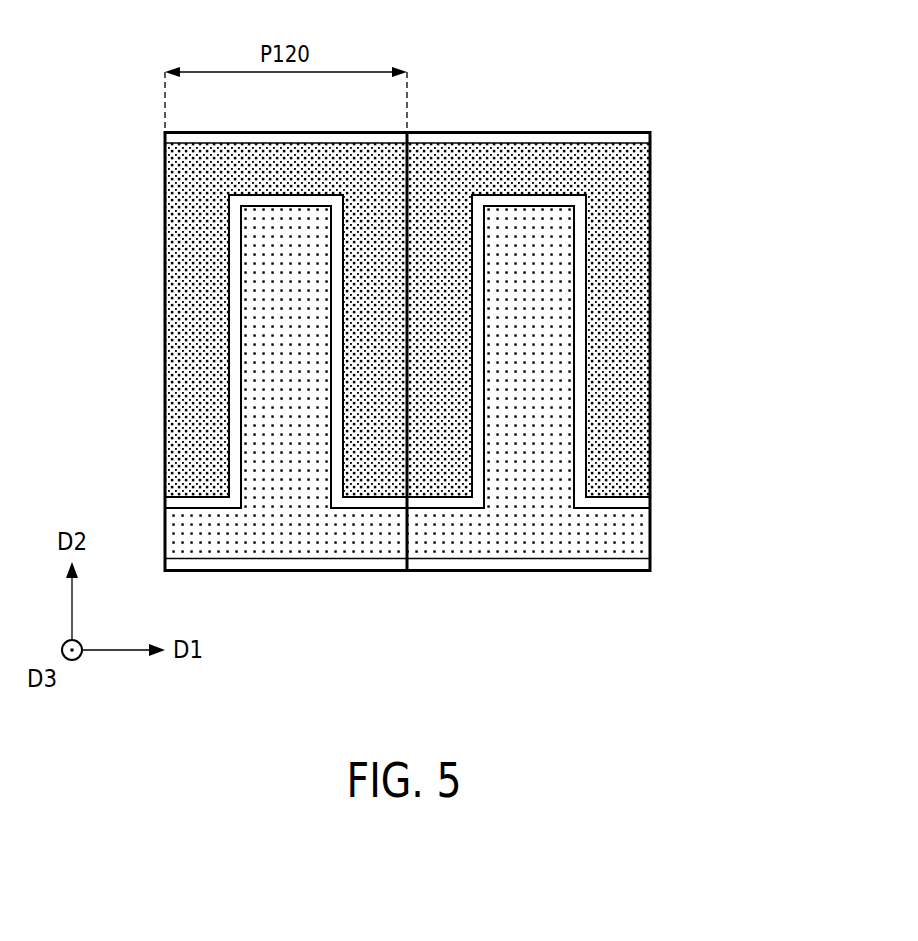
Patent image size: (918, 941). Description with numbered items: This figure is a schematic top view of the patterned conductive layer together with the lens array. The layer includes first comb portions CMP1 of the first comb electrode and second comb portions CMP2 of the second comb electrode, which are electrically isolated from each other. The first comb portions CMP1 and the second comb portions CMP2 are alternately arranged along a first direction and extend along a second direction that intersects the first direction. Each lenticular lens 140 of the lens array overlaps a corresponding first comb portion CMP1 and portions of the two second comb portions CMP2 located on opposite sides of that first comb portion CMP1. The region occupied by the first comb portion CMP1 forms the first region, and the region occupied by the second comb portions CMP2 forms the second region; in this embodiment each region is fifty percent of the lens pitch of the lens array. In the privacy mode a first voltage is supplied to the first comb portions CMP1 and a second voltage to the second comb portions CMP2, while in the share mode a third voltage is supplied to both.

The lenticular lens 140 is at (285, 571).
The first comb portion CMP1 is at (540, 399).
The second comb portion CMP2 is at (445, 347).